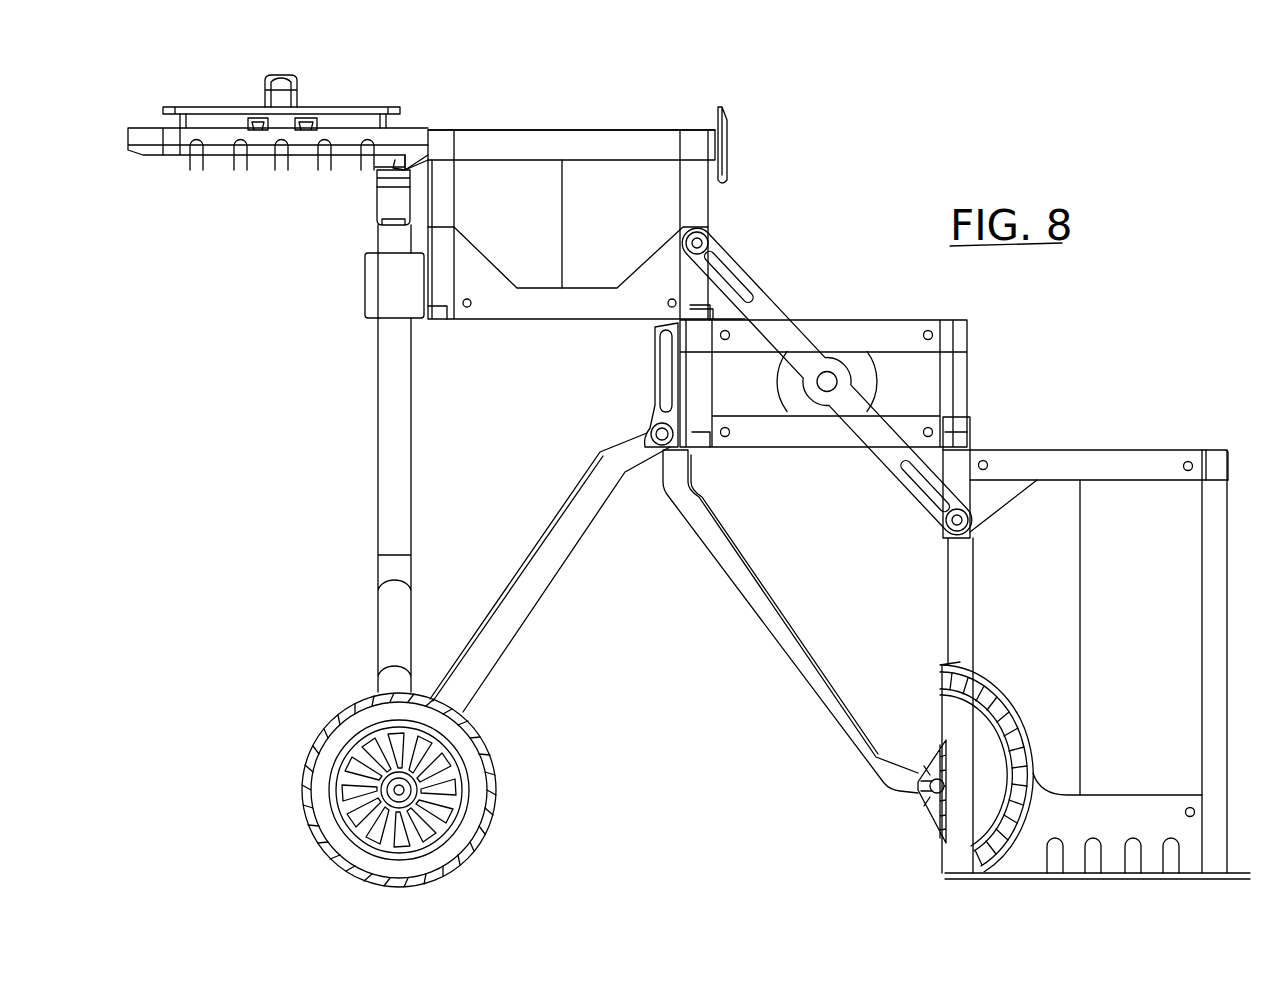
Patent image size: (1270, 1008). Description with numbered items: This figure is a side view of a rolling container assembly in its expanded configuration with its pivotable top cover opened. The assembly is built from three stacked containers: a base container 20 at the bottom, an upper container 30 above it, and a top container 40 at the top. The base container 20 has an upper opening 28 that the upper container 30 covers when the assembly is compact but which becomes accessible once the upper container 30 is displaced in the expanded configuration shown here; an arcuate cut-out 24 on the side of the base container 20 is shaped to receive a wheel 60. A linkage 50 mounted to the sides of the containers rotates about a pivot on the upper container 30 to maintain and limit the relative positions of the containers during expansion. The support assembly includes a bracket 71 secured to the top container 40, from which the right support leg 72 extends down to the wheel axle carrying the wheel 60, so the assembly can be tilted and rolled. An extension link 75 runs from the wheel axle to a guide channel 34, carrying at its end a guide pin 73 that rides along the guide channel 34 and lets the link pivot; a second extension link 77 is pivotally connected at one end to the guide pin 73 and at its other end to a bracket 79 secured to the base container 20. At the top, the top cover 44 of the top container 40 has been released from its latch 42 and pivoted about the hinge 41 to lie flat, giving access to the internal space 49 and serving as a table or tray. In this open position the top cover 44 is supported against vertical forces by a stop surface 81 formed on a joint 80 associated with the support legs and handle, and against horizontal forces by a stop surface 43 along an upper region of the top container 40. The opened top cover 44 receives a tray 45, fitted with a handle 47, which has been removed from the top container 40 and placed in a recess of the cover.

The base container 20 is at (1185, 518).
The arcuate cut-out 24 is at (1020, 724).
The upper opening 28 is at (1118, 442).
The upper container 30 is at (925, 386).
The guide channel 34 is at (658, 372).
The top container 40 is at (695, 203).
The hinge 41 is at (430, 128).
The latch 42 is at (728, 146).
The stop surface 43 is at (410, 168).
The top cover 44 is at (218, 168).
The tray 45 is at (193, 106).
The handle 47 is at (284, 75).
The internal space 49 is at (606, 119).
The linkage 50 is at (768, 318).
The wheel 60 is at (493, 768).
The bracket 71 is at (395, 291).
The right support leg 72 is at (390, 428).
The guide pin 73 is at (636, 422).
The extension link 75 is at (530, 575).
The second extension link 77 is at (773, 636).
The bracket 79 is at (930, 760).
The joint 80 is at (398, 205).
The stop surface 81 is at (378, 190).